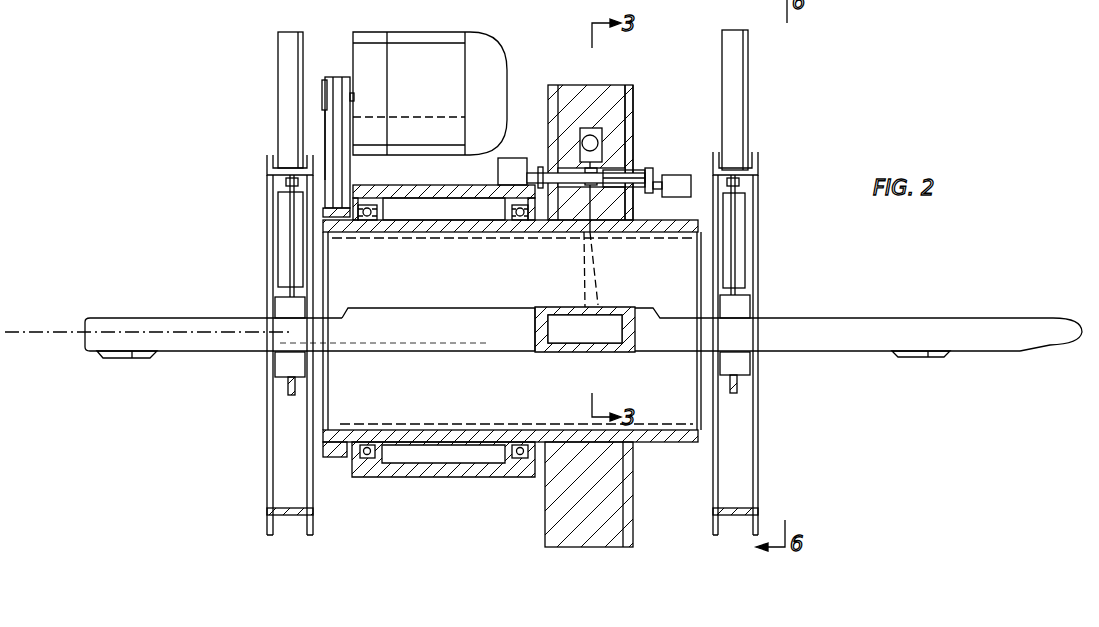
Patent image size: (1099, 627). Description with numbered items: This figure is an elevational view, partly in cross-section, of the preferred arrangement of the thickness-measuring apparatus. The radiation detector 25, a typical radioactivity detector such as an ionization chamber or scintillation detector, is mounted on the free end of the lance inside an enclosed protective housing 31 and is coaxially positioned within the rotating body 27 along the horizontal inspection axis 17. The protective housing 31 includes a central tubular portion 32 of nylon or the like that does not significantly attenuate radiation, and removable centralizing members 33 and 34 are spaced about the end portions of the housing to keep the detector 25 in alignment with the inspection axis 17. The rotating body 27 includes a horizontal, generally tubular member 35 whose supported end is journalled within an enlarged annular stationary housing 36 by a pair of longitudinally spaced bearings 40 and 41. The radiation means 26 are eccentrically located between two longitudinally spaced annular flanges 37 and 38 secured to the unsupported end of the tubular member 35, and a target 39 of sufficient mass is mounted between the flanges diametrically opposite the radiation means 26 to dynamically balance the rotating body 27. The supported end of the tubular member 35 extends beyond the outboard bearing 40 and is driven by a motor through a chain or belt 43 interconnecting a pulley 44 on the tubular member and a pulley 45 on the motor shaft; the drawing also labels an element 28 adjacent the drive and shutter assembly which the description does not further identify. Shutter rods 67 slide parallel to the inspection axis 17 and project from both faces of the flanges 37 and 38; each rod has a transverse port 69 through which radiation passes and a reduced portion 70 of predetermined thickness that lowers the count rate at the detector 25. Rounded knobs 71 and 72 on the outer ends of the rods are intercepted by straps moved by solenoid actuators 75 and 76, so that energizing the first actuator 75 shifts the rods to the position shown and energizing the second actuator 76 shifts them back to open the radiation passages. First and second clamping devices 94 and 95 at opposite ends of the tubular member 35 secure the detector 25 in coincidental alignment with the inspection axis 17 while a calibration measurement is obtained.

The inspection axis 17 is at (30, 330).
The radiation detector 25 is at (585, 329).
The radiation means 26 is at (600, 128).
The rotating body 27 is at (566, 48).
The gear box 28 is at (535, 143).
The protective housing 31 is at (432, 345).
The central tubular portion 32 is at (576, 345).
The centralizing member 33 is at (132, 360).
The centralizing member 34 is at (928, 358).
The tubular member 35 is at (423, 228).
The stationary housing 36 is at (463, 478).
The annular flange 37 is at (552, 106).
The annular flange 38 is at (629, 85).
The target 39 is at (634, 491).
The bearing 40 is at (373, 222).
The bearing 41 is at (520, 222).
The chain or belt 43 is at (330, 130).
The pulley 44 is at (334, 460).
The pulley 45 is at (327, 85).
The shutter rod 67 is at (638, 172).
The transverse port 69 is at (618, 234).
The reduced portion 70 is at (580, 224).
The rounded knob 71 is at (540, 234).
The rounded knob 72 is at (650, 172).
The solenoid actuator 75 is at (510, 168).
The solenoid actuator 76 is at (682, 178).
The clamping device 94 is at (252, 150).
The clamping device 95 is at (772, 153).